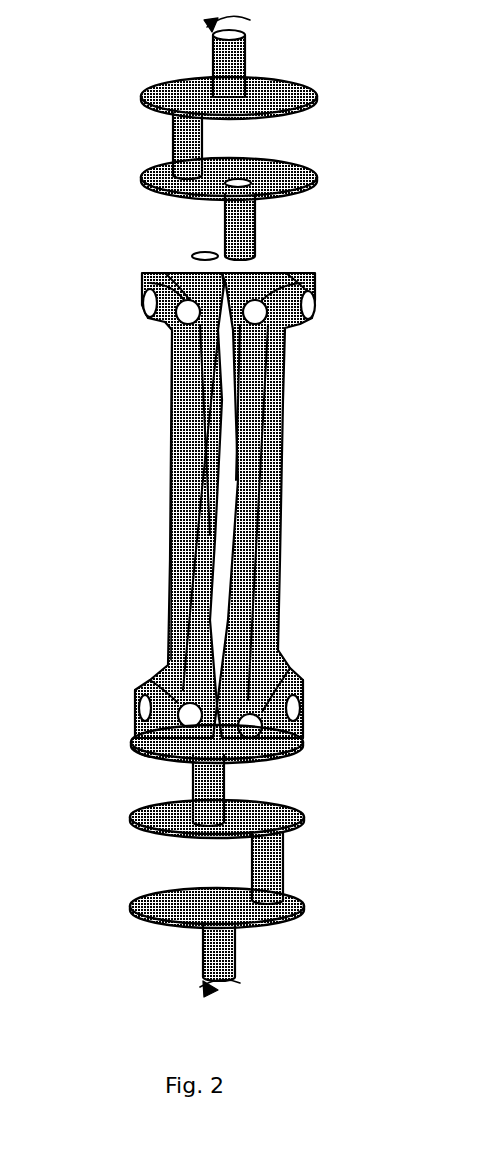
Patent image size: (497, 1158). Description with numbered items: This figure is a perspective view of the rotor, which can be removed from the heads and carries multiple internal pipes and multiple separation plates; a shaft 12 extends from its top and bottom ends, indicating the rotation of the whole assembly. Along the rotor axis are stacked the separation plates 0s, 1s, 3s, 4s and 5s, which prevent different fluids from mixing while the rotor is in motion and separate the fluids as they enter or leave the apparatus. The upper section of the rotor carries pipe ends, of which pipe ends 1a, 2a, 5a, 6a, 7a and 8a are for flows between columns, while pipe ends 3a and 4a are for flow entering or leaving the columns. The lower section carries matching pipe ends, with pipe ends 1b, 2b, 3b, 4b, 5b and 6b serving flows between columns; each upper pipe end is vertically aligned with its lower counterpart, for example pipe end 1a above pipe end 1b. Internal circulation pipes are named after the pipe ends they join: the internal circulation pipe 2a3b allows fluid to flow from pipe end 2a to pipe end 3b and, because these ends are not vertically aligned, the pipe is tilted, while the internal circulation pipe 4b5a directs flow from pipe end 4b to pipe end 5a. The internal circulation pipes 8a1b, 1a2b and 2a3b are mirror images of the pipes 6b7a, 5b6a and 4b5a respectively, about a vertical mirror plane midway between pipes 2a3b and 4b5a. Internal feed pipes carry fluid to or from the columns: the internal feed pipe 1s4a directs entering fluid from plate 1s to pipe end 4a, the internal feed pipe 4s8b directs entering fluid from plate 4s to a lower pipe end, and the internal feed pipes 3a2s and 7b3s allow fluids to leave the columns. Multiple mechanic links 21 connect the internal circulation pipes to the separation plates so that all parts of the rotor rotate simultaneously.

The input shaft 12 is at (228, 62).
The separation plate 0s is at (150, 94).
The separation plate 1s is at (150, 176).
The internal feed pipe 1s4a is at (248, 218).
The pipe end 8a is at (186, 280).
The pipe end 7a is at (283, 262).
The pipe end 6a is at (303, 275).
The pipe end 1a is at (140, 286).
The pipe end 2a is at (150, 310).
The pipe end 5a is at (312, 305).
The pipe end 3a is at (180, 318).
The pipe end 4a is at (286, 326).
The internal feed pipe 3a2s is at (194, 336).
The internal circulation pipe 2a3b is at (190, 413).
The internal circulation pipe 1a2b is at (175, 532).
The internal circulation pipe 5b6a is at (270, 512).
The internal circulation pipe 4b5a is at (248, 588).
The internal circulation pipe 8a1b is at (160, 680).
The pipe end 1b is at (143, 693).
The internal circulation pipe 6b7a is at (278, 673).
The pipe end 6b is at (298, 687).
The pipe end 2b is at (143, 713).
The pipe end 5b is at (296, 710).
The mechanic links 21 is at (235, 751).
The separation plate 3s is at (135, 750).
The pipe end 3b is at (183, 740).
The pipe end 4b is at (248, 735).
The internal feed pipe 7b3s is at (293, 752).
The internal feed pipe 4s8b is at (215, 795).
The separation plate 4s is at (136, 830).
The separation plate 5s is at (143, 918).